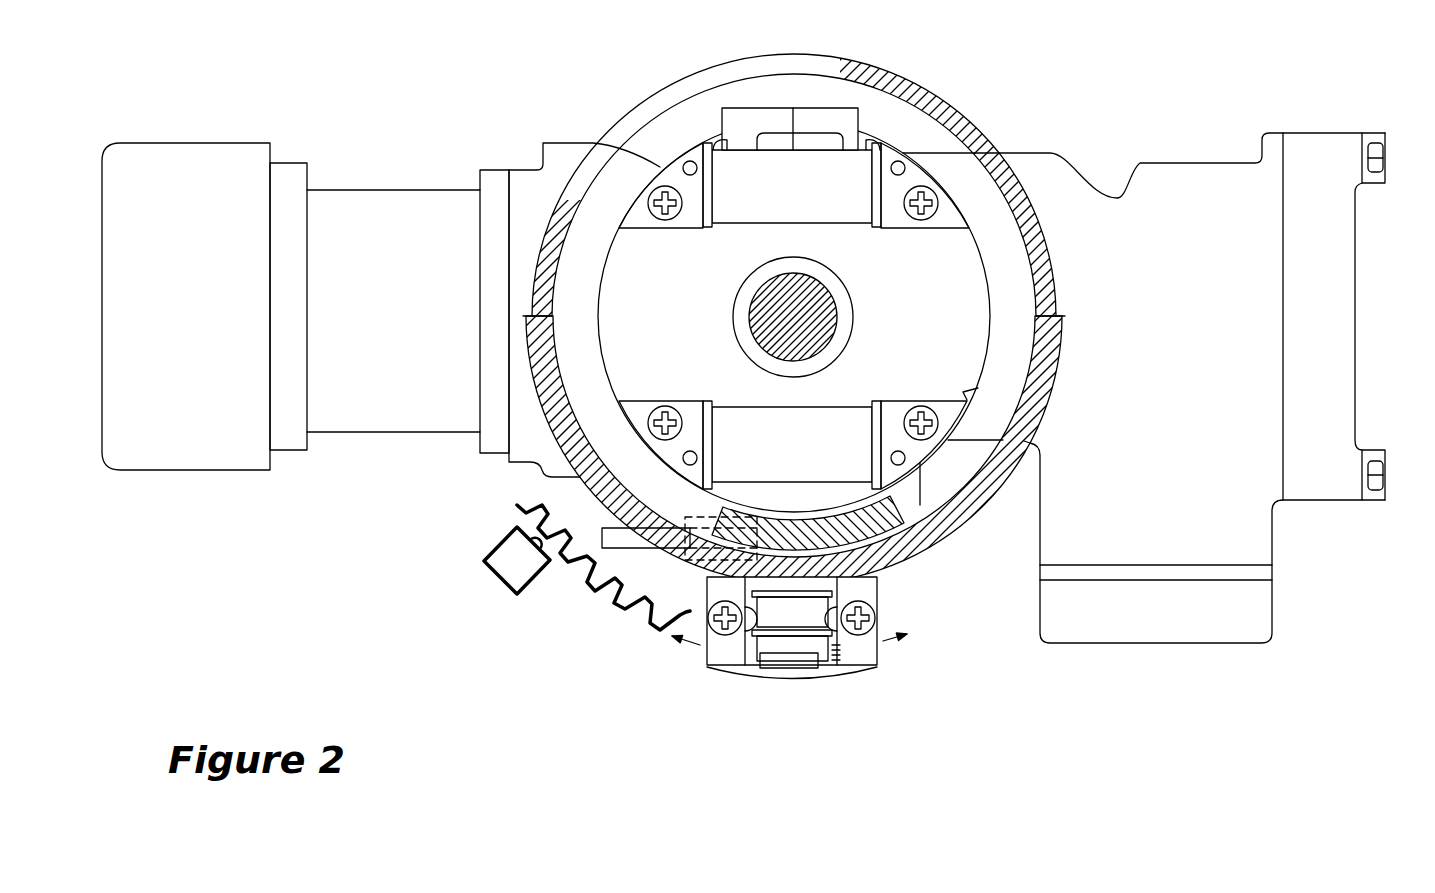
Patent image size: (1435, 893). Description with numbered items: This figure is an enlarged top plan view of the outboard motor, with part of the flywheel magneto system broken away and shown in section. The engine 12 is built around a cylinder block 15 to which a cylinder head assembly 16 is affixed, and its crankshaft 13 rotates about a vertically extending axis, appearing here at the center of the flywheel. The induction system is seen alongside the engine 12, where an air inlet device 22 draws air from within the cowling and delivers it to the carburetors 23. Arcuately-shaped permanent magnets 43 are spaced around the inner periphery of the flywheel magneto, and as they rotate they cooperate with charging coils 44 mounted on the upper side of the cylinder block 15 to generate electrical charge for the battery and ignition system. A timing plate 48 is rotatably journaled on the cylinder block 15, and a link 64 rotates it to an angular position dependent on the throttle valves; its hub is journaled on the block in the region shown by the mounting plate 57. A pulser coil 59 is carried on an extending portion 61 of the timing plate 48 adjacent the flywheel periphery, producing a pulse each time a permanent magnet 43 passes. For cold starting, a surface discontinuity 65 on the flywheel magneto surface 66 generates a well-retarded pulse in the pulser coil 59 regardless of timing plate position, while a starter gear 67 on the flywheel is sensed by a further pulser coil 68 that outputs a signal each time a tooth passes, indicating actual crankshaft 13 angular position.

The engine 12 is at (1176, 108).
The crankshaft 13 is at (832, 290).
The cylinder block 15 is at (1067, 177).
The cylinder head assembly 16 is at (1340, 233).
The air inlet device 22 is at (178, 466).
The carburetors 23 is at (377, 422).
The permanent magnets 43 is at (1014, 482).
The charging coils 44 is at (855, 168).
The timing plate 48 is at (885, 567).
The mounting plate 57 is at (972, 353).
The pulser coil 59 is at (807, 648).
The extending portion 61 is at (785, 673).
The link 64 is at (613, 548).
The surface discontinuity 65 is at (1065, 308).
The flywheel magneto surface 66 is at (960, 510).
The starter gear 67 is at (617, 604).
The further pulser coil 68 is at (484, 568).